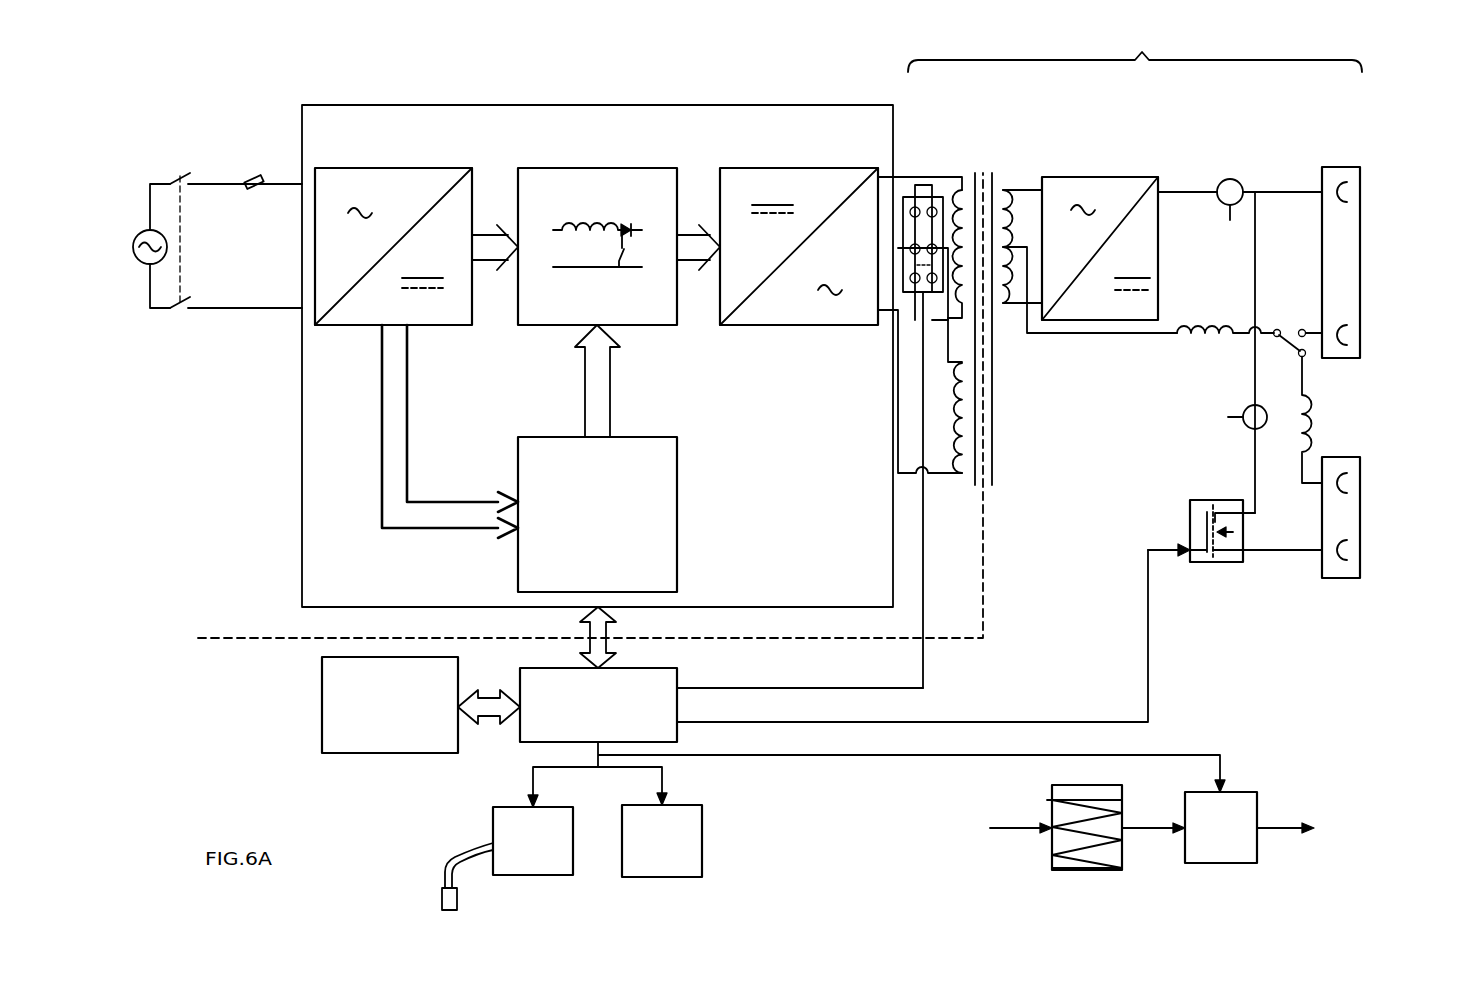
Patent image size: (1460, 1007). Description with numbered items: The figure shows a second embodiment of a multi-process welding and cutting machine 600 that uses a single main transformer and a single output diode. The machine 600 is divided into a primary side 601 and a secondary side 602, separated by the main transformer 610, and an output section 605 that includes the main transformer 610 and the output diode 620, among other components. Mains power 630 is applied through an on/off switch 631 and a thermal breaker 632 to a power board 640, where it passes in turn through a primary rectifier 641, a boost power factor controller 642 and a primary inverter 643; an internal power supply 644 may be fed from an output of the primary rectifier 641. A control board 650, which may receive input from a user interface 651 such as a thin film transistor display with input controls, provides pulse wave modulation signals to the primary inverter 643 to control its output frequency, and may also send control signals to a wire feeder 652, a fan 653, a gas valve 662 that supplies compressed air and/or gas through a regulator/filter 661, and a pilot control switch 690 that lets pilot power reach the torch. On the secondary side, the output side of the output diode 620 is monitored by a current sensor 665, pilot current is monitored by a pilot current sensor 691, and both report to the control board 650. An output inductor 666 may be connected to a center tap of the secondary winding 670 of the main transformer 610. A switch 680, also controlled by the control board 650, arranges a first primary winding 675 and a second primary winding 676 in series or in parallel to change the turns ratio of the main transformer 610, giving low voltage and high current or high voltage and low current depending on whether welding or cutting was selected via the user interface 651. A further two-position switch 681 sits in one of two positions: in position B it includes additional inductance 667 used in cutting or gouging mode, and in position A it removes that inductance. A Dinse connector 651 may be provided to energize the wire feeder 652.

The machine 600 is at (817, 845).
The primary side 601 is at (569, 340).
The secondary side 602 is at (1111, 203).
The output section 605 is at (1135, 47).
The main transformer 610 is at (992, 433).
The output diode 620 is at (1157, 250).
The mains power 630 is at (137, 262).
The on/off switch 631 is at (186, 110).
The thermal breaker 632 is at (250, 110).
The power board 640 is at (302, 555).
The primary rectifier 641 is at (357, 325).
The boost power factor controller (PFC) 642 is at (557, 325).
The primary inverter 643 is at (772, 325).
The internal power supply 644 is at (548, 437).
The control board 650 is at (640, 667).
The user interface 651 is at (442, 900).
The wire feeder 652 is at (510, 877).
The fan 653 is at (673, 877).
The regulator/filter 661 is at (1123, 800).
The gas valve 662 is at (1257, 810).
The current sensor 665 is at (1258, 128).
The output inductor 666 is at (1200, 270).
The additional inductance 667 is at (1313, 420).
The secondary winding 670 is at (998, 193).
The first primary winding 675 is at (985, 302).
The second primary winding 676 is at (962, 455).
The switch 680 is at (914, 160).
The switch (SW1) 681 is at (1288, 283).
The pilot control switch 690 is at (1222, 565).
The pilot current sensor 691 is at (1145, 418).